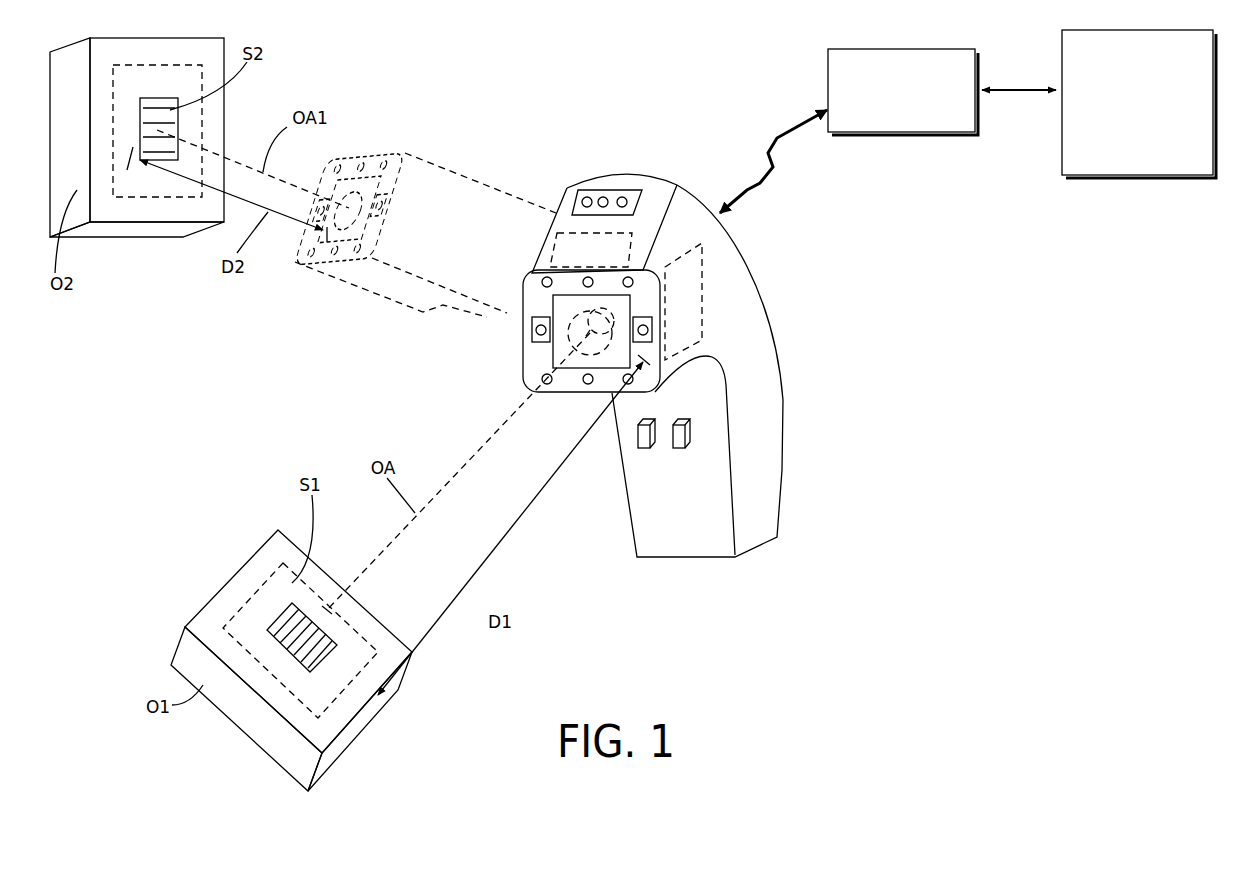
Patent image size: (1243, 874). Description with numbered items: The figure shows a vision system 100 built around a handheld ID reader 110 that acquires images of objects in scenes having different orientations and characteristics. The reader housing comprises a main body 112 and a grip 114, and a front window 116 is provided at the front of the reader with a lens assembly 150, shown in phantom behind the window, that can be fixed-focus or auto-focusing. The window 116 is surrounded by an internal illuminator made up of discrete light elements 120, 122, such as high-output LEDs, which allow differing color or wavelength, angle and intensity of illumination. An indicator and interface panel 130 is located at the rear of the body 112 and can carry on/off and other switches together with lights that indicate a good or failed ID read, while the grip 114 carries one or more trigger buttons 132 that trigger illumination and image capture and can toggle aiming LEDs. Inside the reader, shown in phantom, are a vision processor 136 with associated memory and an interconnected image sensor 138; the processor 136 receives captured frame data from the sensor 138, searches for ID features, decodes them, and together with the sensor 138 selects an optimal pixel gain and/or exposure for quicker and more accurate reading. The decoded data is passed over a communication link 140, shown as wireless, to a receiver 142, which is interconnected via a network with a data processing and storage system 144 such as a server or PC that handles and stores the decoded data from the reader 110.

The vision system 100 is at (597, 68).
The ID reader 110 is at (790, 390).
The main body 112 is at (683, 197).
The grip 114 is at (770, 463).
The front window 116 is at (553, 362).
The discrete light elements 120 is at (544, 279).
The discrete light elements 122 is at (533, 328).
The indicator and interface panel 130 is at (610, 190).
The trigger buttons 132 is at (647, 449).
The vision processor 136 is at (700, 342).
The image sensor 138 is at (633, 233).
The communication link 140 is at (773, 140).
The receiver 142 is at (903, 92).
The data processing and storage system 144 is at (1139, 104).
The lens assembly 150 is at (557, 358).